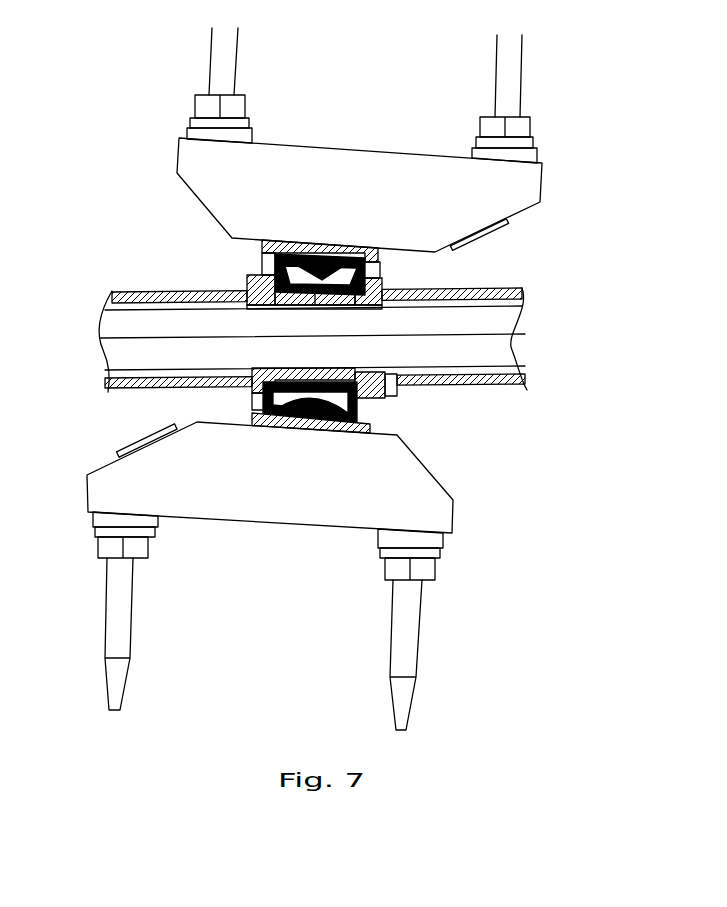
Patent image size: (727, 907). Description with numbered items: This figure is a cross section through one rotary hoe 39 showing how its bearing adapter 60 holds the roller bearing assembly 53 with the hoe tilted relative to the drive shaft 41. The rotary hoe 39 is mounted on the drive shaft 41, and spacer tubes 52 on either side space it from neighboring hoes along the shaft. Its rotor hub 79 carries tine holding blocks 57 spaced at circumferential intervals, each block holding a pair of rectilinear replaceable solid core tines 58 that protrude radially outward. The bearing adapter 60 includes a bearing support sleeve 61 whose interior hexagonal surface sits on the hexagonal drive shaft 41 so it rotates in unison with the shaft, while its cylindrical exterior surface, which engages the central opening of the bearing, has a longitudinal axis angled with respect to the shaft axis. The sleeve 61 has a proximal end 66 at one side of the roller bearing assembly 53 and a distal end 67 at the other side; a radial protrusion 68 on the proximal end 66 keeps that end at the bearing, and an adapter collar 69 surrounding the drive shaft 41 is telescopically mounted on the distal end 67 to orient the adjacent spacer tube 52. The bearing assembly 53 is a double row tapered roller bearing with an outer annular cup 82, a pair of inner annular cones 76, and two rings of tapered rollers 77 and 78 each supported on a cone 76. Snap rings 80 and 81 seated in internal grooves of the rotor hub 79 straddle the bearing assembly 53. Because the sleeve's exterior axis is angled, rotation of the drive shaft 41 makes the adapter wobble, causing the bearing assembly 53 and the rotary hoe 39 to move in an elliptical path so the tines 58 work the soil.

The rotary hoe 39 is at (345, 345).
The drive shaft 41 is at (155, 310).
The spacer tube 52 is at (123, 291).
The roller bearing assembly 53 is at (311, 241).
The tine holding block 57 is at (403, 162).
The tine 58 is at (211, 47).
The bearing adapter 60 is at (246, 280).
The bearing support sleeve 61 is at (318, 304).
The proximal end 66 is at (250, 368).
The distal end 67 is at (365, 370).
The radial protrusion 68 is at (252, 395).
The adapter collar 69 is at (392, 394).
The inner annular cone 76 is at (300, 302).
The ring of tapered rollers 77 is at (293, 382).
The ring of tapered rollers 78 is at (331, 382).
The rotor hub 79 is at (369, 262).
The snap ring 80 is at (373, 272).
The snap ring 81 is at (265, 258).
The outer annular cup 82 is at (328, 266).